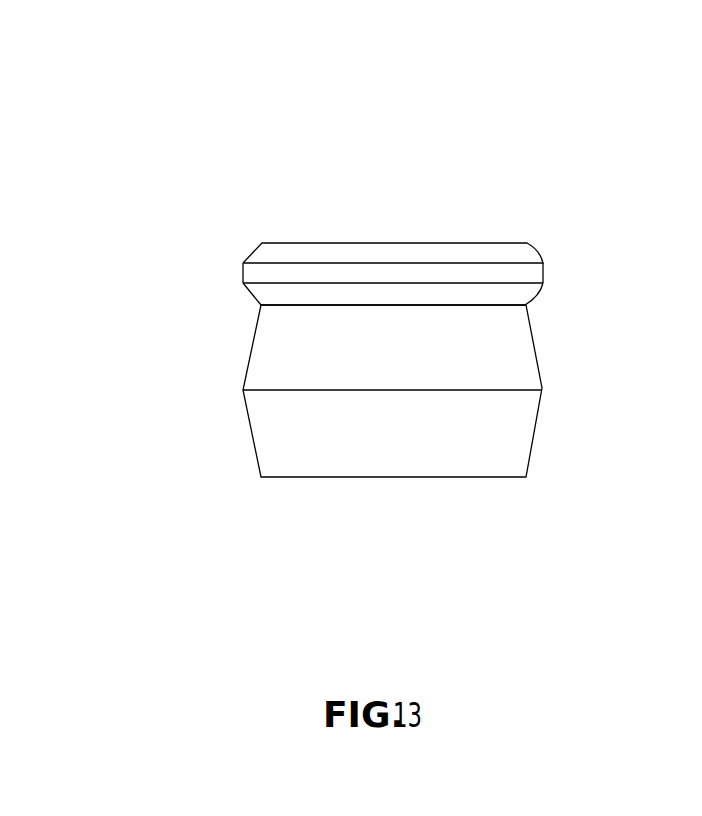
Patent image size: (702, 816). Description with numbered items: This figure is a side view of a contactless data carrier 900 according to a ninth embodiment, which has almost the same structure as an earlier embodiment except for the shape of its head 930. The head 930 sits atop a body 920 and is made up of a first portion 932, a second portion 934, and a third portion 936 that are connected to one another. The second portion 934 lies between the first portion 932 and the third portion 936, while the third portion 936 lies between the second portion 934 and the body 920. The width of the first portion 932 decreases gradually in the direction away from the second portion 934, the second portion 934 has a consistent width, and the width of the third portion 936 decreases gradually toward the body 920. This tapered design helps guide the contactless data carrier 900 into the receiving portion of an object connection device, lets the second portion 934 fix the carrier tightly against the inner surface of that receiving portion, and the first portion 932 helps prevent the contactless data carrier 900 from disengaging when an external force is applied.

The contactless data carrier 900 is at (439, 261).
The body 920 is at (542, 387).
The head 930 is at (472, 271).
The first portion 932 is at (534, 253).
The second portion 934 is at (535, 272).
The third portion 936 is at (439, 308).